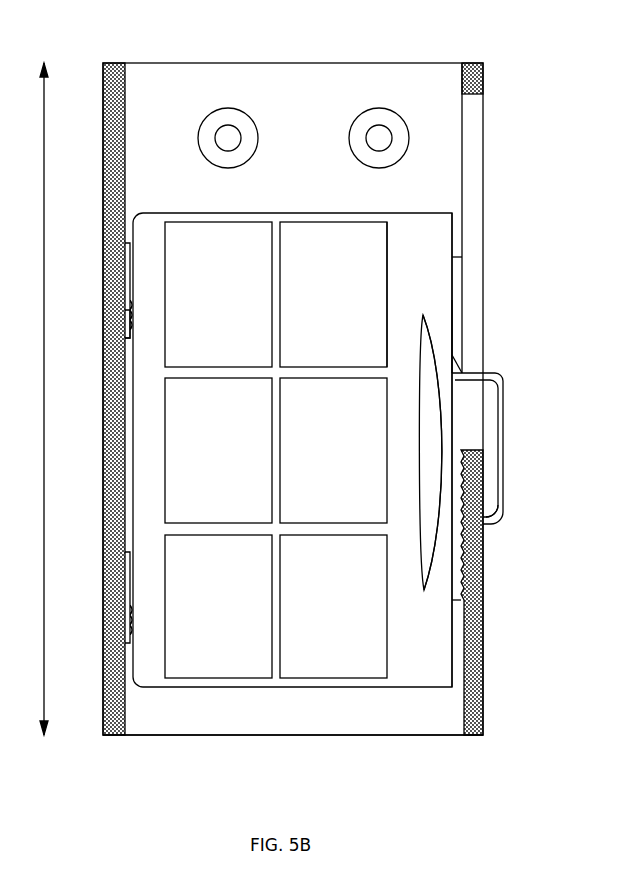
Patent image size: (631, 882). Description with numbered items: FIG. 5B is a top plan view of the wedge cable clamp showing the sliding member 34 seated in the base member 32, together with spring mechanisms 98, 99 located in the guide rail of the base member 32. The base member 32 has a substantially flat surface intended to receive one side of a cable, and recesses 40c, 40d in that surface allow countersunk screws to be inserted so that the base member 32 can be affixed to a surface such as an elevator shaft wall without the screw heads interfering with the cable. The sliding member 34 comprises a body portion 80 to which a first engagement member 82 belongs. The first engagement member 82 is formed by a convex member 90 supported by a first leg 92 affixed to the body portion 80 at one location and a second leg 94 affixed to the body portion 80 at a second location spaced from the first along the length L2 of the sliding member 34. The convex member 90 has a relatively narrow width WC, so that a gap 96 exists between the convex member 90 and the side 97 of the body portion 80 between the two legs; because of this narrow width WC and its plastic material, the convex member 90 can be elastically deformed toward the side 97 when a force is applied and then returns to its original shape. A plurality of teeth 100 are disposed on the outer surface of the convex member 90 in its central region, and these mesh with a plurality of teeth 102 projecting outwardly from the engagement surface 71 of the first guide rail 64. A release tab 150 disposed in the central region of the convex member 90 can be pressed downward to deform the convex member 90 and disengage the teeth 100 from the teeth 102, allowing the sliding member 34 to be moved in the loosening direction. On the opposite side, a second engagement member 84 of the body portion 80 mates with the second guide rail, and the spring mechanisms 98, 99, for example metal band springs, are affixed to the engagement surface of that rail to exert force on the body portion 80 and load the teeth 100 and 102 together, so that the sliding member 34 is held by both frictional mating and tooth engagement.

The first guide rail 64 is at (492, 110).
The base member 32 is at (128, 722).
The engagement surface 71 is at (466, 70).
The recess 40c is at (226, 108).
The recess 40d is at (377, 108).
The first leg 92 is at (412, 223).
The body portion 80 is at (278, 213).
The sliding member 34 is at (428, 229).
The first engagement member 82 is at (396, 282).
The convex member 90 is at (443, 348).
The width of convex member WC is at (441, 365).
The teeth 100 is at (458, 418).
The release tab 150 is at (490, 508).
The side of body portion 97 is at (419, 346).
The gap 96 is at (430, 520).
The teeth 102 is at (458, 573).
The second leg 94 is at (413, 642).
The second engagement member 84 is at (127, 243).
The spring mechanism 98 is at (125, 318).
The spring mechanism 99 is at (125, 622).
The length of sliding member L2 is at (31, 399).